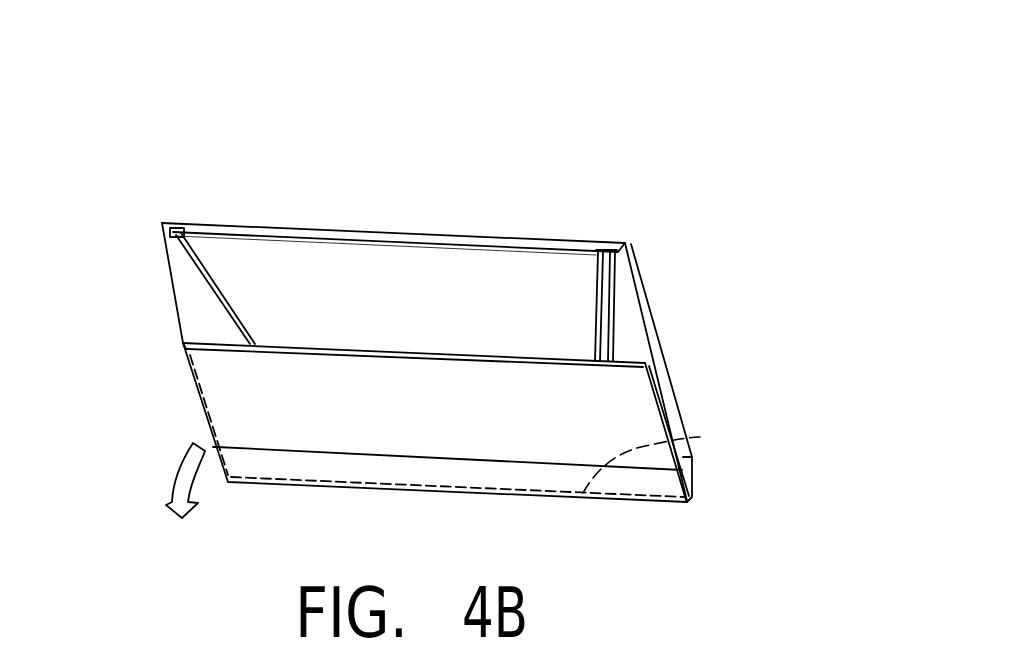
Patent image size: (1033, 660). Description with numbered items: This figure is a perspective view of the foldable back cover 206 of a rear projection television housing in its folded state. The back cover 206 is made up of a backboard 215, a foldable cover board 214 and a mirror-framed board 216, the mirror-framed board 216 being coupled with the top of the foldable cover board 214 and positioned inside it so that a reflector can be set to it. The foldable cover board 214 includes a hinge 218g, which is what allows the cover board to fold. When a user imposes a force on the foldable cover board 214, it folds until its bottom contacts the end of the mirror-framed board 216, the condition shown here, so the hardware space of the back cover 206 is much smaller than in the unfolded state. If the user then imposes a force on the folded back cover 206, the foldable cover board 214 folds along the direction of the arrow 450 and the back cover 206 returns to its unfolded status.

The back cover 206 is at (727, 55).
The foldable cover board 214 is at (630, 337).
The backboard 215 is at (337, 387).
The mirror-framed board 216 is at (430, 290).
The hinge 218g is at (703, 434).
The arrow 450 is at (182, 468).